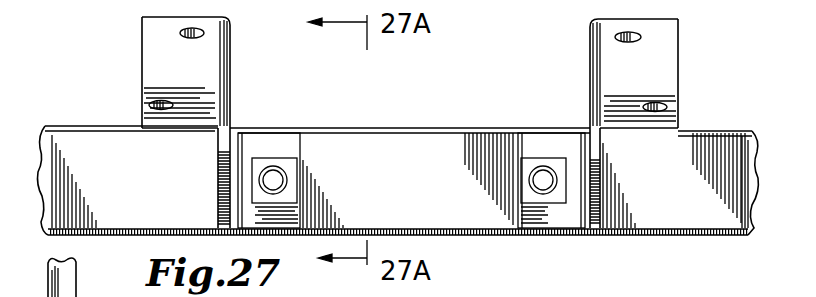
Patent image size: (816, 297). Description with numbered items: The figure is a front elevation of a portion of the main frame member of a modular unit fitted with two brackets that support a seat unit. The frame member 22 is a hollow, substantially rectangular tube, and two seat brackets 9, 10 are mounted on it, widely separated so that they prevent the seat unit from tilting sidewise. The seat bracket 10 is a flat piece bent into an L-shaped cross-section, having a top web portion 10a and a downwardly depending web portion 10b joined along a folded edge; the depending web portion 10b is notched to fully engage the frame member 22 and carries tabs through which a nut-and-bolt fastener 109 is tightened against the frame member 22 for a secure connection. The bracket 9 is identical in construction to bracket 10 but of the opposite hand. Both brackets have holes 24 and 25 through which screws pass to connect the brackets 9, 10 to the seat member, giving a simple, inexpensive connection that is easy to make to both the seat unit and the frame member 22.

The seat bracket 9 is at (660, 75).
The seat bracket 10 is at (210, 93).
The top web portion 10a is at (158, 72).
The downwardly depending web portion 10b is at (222, 152).
The frame member 22 is at (438, 141).
The hole 24 is at (204, 33).
The hole 25 is at (642, 35).
The nut assembly 109 is at (278, 150).